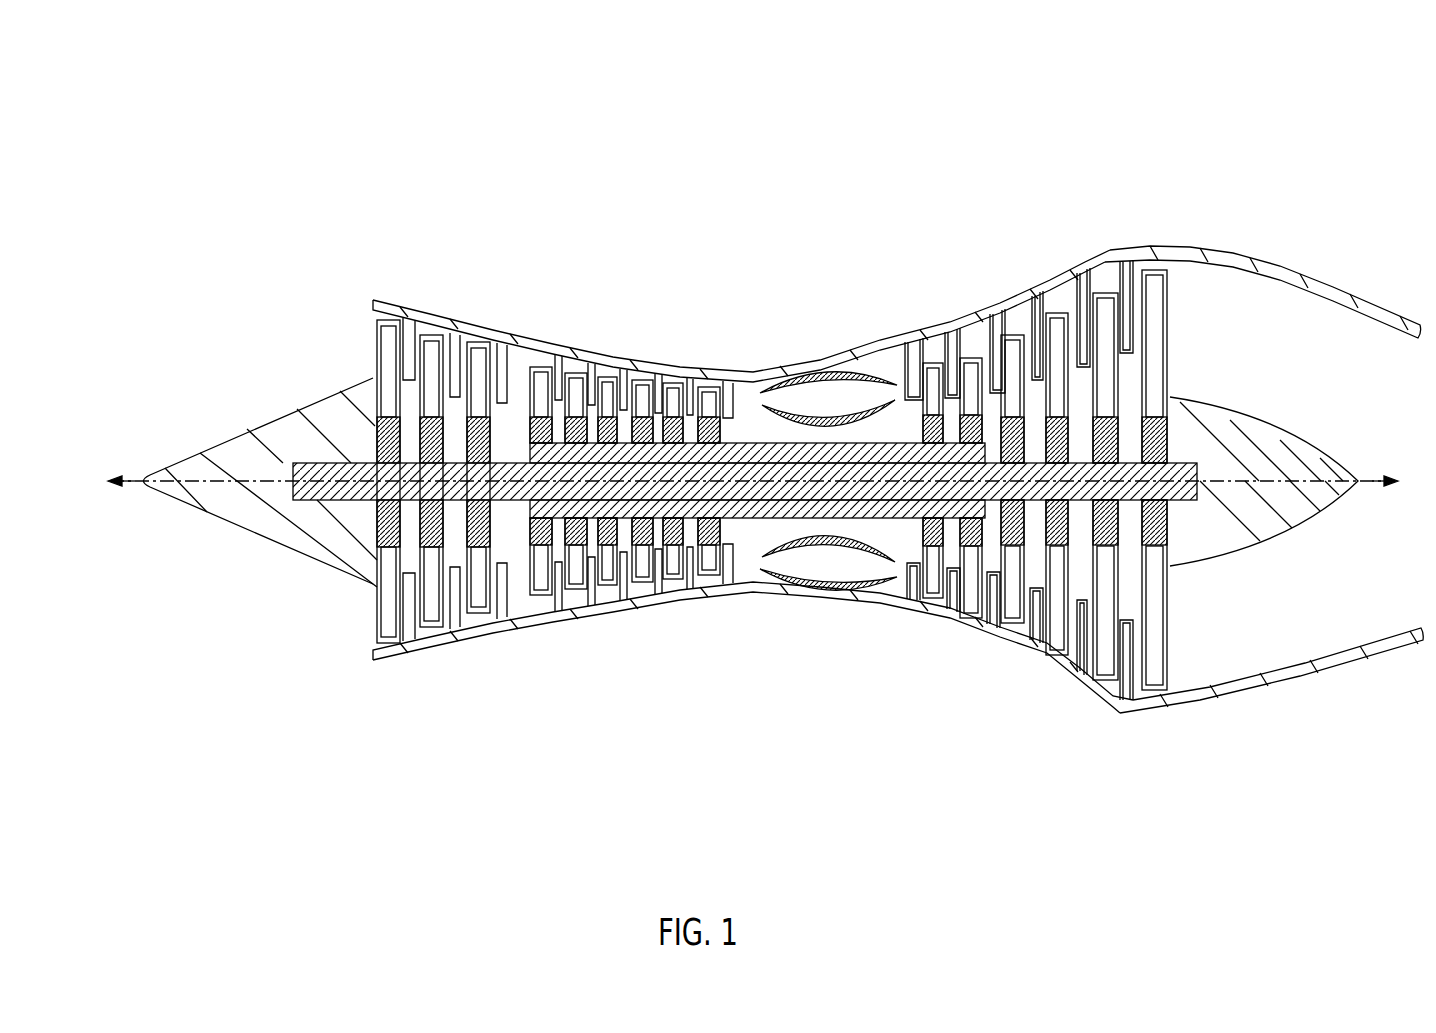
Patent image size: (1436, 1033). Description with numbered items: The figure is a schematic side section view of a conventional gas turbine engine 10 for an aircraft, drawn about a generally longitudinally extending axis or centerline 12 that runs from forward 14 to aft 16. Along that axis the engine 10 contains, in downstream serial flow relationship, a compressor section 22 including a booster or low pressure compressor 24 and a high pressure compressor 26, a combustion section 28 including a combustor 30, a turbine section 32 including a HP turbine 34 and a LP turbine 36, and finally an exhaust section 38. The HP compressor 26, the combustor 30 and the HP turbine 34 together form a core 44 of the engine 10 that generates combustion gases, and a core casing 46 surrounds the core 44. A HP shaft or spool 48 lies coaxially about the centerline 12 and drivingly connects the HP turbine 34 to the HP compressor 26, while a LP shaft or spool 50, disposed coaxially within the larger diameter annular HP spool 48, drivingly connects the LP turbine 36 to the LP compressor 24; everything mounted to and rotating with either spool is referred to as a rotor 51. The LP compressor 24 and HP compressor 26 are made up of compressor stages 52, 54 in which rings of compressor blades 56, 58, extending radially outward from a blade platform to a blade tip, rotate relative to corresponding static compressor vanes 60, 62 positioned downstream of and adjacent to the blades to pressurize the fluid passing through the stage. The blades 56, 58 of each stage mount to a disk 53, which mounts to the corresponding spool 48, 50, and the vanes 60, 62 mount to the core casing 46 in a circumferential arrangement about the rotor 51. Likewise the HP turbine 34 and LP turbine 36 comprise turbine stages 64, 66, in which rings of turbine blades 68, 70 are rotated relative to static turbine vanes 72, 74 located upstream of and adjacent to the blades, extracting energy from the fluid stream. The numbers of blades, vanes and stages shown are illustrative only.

The gas turbine engine 10 is at (175, 68).
The centerline 12 is at (210, 457).
The forward 14 is at (735, 481).
The aft 16 is at (1403, 481).
The compressor section 22 is at (370, 856).
The low pressure (LP) compressor 24 is at (520, 645).
The high pressure (HP) compressor 26 is at (684, 602).
The combustion section 28 is at (923, 856).
The combustor 30 is at (887, 370).
The turbine section 32 is at (1160, 856).
The HP turbine 34 is at (895, 628).
The LP turbine 36 is at (1045, 690).
The exhaust section 38 is at (1165, 856).
The core 44 is at (985, 710).
The core casing 46 is at (800, 374).
The HP shaft or spool 48 is at (751, 450).
The LP shaft or spool 50 is at (520, 460).
The rotor 51 is at (667, 457).
The compressor stage 52 is at (376, 283).
The disk 53 is at (1050, 420).
The compressor stage 54 is at (540, 342).
The compressor blades 56 is at (415, 340).
The compressor blades 58 is at (560, 400).
The static compressor vanes 60 is at (432, 400).
The static compressor vanes 62 is at (580, 398).
The turbine stage 64 is at (935, 321).
The turbine stage 66 is at (1076, 267).
The turbine blades 68 is at (975, 390).
The turbine blades 70 is at (1100, 373).
The static turbine vanes 72 is at (960, 375).
The static turbine vanes 74 is at (1090, 355).